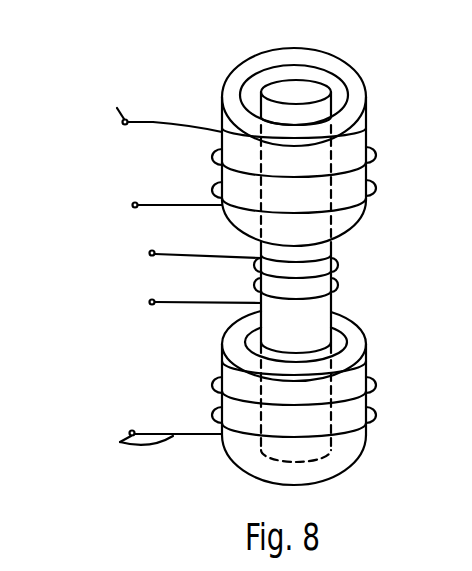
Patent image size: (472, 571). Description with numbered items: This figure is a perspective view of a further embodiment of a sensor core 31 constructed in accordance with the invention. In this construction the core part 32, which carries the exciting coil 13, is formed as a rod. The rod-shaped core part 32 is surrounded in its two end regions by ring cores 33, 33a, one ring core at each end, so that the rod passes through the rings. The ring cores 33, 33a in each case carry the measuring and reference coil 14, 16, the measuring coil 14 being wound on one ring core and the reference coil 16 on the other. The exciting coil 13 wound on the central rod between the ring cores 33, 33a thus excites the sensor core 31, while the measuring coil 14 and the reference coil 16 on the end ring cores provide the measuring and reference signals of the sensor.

The ring core 33a is at (235, 92).
The sensor core 31 is at (368, 123).
The reference coil 16 is at (153, 122).
The core part 32 is at (276, 316).
The exciting coil 13 is at (172, 254).
The ring core 33 is at (252, 462).
The measuring coil 14 is at (120, 442).